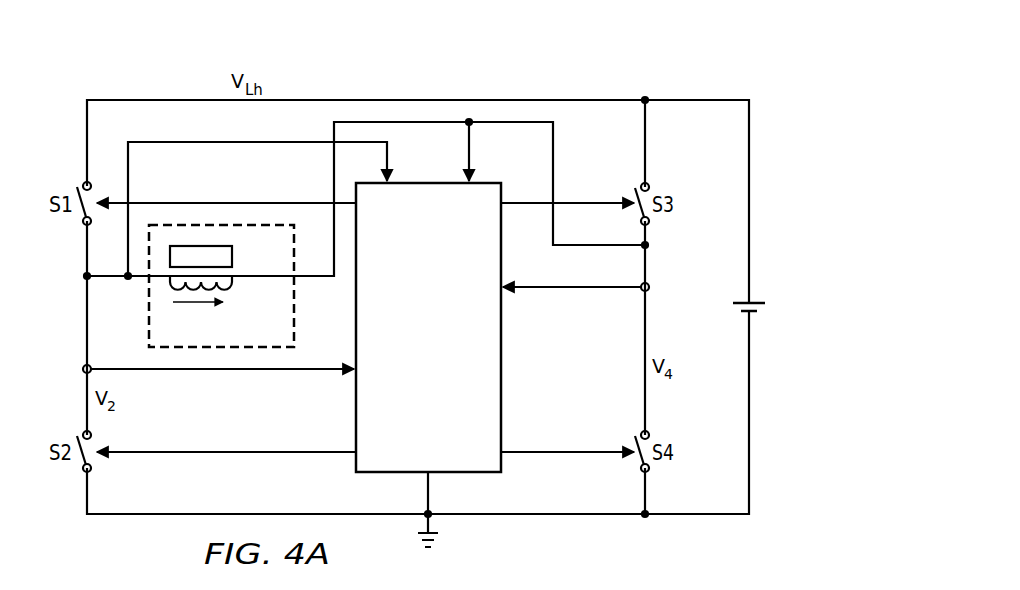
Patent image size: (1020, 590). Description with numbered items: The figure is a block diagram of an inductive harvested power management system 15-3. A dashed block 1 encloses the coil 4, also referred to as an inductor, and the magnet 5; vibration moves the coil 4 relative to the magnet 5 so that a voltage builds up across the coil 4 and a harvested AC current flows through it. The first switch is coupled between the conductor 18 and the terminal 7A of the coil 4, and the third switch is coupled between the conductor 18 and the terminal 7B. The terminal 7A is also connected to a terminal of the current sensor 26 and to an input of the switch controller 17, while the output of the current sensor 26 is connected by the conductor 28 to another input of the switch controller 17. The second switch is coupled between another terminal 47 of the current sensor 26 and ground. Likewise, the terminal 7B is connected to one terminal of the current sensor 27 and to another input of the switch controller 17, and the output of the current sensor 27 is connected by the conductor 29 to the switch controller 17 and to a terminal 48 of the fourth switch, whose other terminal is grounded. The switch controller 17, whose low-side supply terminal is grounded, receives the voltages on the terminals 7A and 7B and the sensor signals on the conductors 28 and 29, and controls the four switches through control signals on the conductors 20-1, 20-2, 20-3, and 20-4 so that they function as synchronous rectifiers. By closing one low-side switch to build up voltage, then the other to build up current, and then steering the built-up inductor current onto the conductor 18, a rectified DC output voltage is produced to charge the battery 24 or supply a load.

The conductor 18 is at (170, 100).
The power management system 15-3 is at (583, 61).
The conductor 20-1 is at (211, 203).
The conductor 20-2 is at (211, 453).
The conductor 20-3 is at (583, 203).
The conductor 20-4 is at (563, 455).
The terminal 7A is at (83, 280).
The terminal 7B is at (334, 280).
The load (glow plug / heater module) 1 is at (146, 306).
The magnet 5 is at (233, 256).
The coil 4 is at (233, 283).
The current sensor 26 is at (82, 369).
The terminal 47 is at (85, 400).
The conductor 28 is at (189, 372).
The current sensor 27 is at (650, 286).
The conductor 29 is at (563, 290).
The terminal 48 is at (645, 366).
The battery 24 is at (733, 306).
The switch controller 17 is at (442, 375).